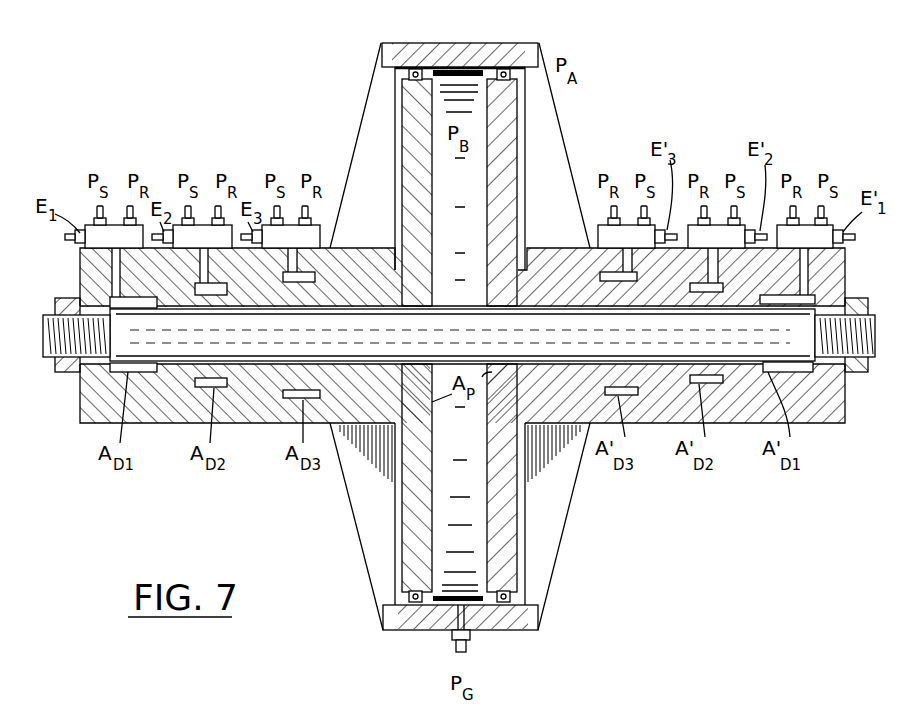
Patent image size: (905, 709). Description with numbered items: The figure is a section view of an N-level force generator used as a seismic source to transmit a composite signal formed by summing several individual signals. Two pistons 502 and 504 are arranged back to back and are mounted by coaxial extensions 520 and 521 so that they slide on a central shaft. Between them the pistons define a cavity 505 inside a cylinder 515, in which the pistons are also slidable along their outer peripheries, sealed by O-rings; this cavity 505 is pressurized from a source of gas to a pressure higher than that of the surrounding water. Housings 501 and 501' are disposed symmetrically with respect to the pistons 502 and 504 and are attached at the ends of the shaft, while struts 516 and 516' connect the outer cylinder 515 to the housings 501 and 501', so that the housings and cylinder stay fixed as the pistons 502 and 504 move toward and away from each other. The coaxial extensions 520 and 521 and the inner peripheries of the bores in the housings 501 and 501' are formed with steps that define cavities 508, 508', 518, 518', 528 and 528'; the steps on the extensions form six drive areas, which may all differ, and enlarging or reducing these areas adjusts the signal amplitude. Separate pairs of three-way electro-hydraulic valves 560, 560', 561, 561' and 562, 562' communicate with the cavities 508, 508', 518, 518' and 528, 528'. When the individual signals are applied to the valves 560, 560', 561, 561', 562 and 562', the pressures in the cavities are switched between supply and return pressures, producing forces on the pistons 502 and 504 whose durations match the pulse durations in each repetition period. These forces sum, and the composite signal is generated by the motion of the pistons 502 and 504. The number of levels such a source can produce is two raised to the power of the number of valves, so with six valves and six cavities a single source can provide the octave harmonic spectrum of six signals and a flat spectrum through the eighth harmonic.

The housing 501 is at (224, 364).
The housing 501' is at (696, 360).
The piston 502 is at (432, 157).
The piston 504 is at (485, 253).
The cavity 505 is at (448, 608).
The cavity 508 is at (116, 380).
The cavity 508' is at (819, 370).
The cylinder 515 is at (485, 43).
The strut 516 is at (341, 526).
The strut 516' is at (588, 526).
The cavity 518 is at (196, 380).
The cavity 518' is at (730, 372).
The coaxial extension 520 is at (353, 280).
The coaxial extension 521 is at (550, 278).
The cavity 528 is at (285, 380).
The cavity 528' is at (641, 375).
The three-way electro-hydraulic valve 560 is at (104, 191).
The three-way electro-hydraulic valve 560' is at (831, 189).
The three-way electro-hydraulic valve 561 is at (195, 191).
The three-way electro-hydraulic valve 561' is at (727, 189).
The three-way electro-hydraulic valve 562 is at (286, 191).
The three-way electro-hydraulic valve 562' is at (630, 189).